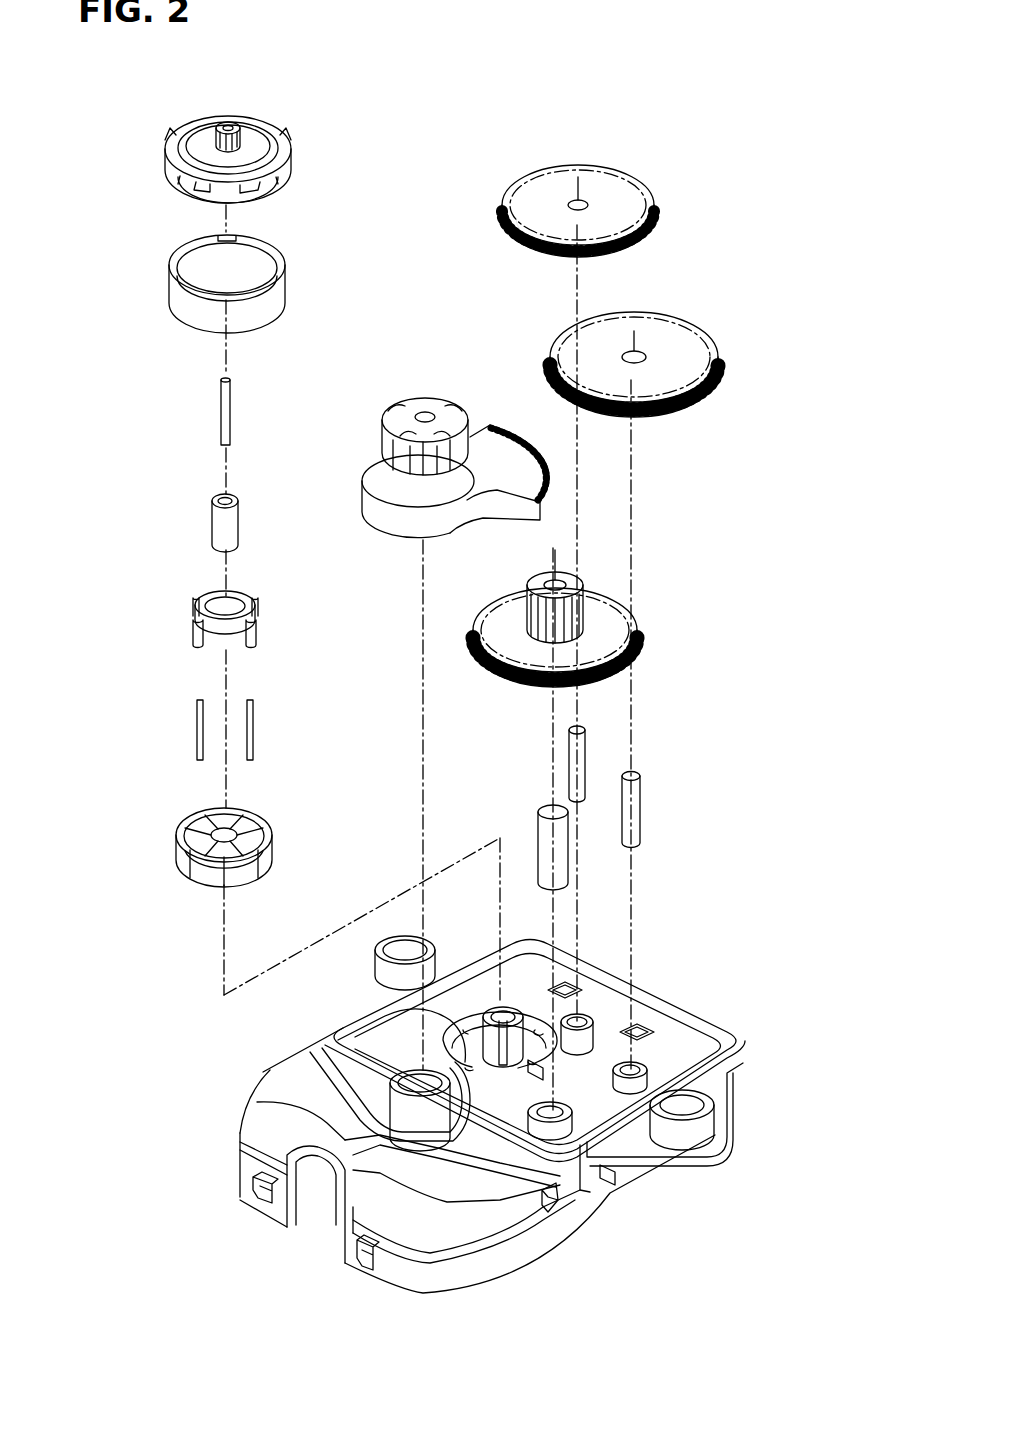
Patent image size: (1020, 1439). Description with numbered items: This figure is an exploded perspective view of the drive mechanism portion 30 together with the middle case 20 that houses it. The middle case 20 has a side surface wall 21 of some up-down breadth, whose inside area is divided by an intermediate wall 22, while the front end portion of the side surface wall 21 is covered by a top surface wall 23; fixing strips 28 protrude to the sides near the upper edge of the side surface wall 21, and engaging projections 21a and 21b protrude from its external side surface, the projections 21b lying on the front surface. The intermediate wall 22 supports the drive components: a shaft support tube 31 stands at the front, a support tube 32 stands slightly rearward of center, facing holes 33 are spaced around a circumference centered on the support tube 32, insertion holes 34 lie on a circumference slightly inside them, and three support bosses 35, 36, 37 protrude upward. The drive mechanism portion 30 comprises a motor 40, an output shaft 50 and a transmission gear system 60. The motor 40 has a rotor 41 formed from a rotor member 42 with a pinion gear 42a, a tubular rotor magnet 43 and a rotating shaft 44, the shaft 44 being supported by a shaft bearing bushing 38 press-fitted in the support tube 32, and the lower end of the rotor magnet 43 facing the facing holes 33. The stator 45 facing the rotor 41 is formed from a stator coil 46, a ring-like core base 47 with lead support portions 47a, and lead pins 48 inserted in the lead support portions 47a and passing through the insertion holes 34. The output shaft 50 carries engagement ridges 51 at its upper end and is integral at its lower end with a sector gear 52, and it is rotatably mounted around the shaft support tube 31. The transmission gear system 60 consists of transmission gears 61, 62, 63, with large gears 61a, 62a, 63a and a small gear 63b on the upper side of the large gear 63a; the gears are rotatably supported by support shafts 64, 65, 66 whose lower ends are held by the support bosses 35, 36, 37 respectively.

The middle case 20 is at (458, 1115).
The side surface wall 21 is at (443, 1241).
The engaging projection 21a is at (556, 1215).
The engaging projection 21b is at (258, 1200).
The intermediate wall 22 is at (665, 1043).
The top surface wall 23 is at (250, 1105).
The fixing strip 28 is at (733, 1165).
The drive mechanism portion 30 is at (686, 292).
The shaft support tube 31 is at (310, 1048).
The support tube 32 is at (487, 1030).
The facing hole 33 is at (490, 1078).
The insertion hole 34 is at (390, 1065).
The support boss 35 is at (592, 1025).
The support boss 36 is at (648, 1078).
The support boss 37 is at (607, 1120).
The shaft bearing bushing 38 is at (212, 525).
The motor 40 is at (158, 352).
The rotor 41 is at (358, 178).
The rotor member 42 is at (255, 127).
The pinion gear 42a is at (240, 140).
The rotor magnet 43 is at (280, 312).
The rotating shaft 44 is at (220, 412).
The stator 45 is at (96, 665).
The stator coil 46 is at (176, 840).
The core base 47 is at (223, 629).
The lead support portion 47a is at (195, 606).
The lead pin 48 is at (196, 708).
The output shaft 50 is at (444, 428).
The engagement ridge 51 is at (400, 405).
The sector gear 52 is at (527, 462).
The transmission gear system 60 is at (687, 477).
The transmission gear 61 is at (568, 181).
The large gear 61a is at (555, 252).
The transmission gear 62 is at (678, 364).
The large gear 62a is at (705, 405).
The transmission gear 63 is at (606, 597).
The large gear 63a is at (632, 660).
The small gear 63b is at (580, 578).
The support shaft 64 is at (580, 760).
The support shaft 65 is at (640, 818).
The support shaft 66 is at (560, 870).